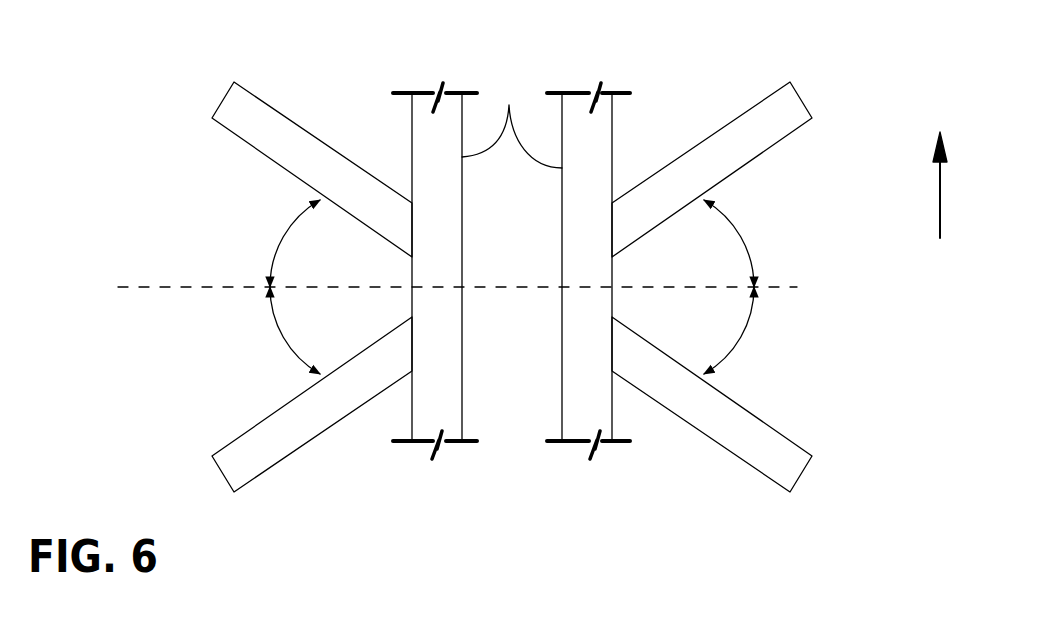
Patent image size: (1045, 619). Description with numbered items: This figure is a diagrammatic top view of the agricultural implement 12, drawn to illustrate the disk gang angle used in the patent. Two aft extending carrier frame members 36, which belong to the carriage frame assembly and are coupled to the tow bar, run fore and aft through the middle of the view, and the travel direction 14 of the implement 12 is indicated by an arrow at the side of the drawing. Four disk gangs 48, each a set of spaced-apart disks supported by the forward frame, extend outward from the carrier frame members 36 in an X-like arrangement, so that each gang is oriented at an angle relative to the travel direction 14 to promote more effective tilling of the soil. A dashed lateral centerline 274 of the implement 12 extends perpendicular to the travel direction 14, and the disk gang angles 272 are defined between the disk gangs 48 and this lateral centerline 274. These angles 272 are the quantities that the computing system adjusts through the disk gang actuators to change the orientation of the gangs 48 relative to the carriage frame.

The agricultural implement 12 is at (80, 135).
The travel direction 14 is at (940, 193).
The carrier frame members 36 is at (509, 105).
The disk gangs 48 is at (223, 99).
The disk gang angles 272 is at (288, 232).
The lateral centerline 274 is at (173, 287).